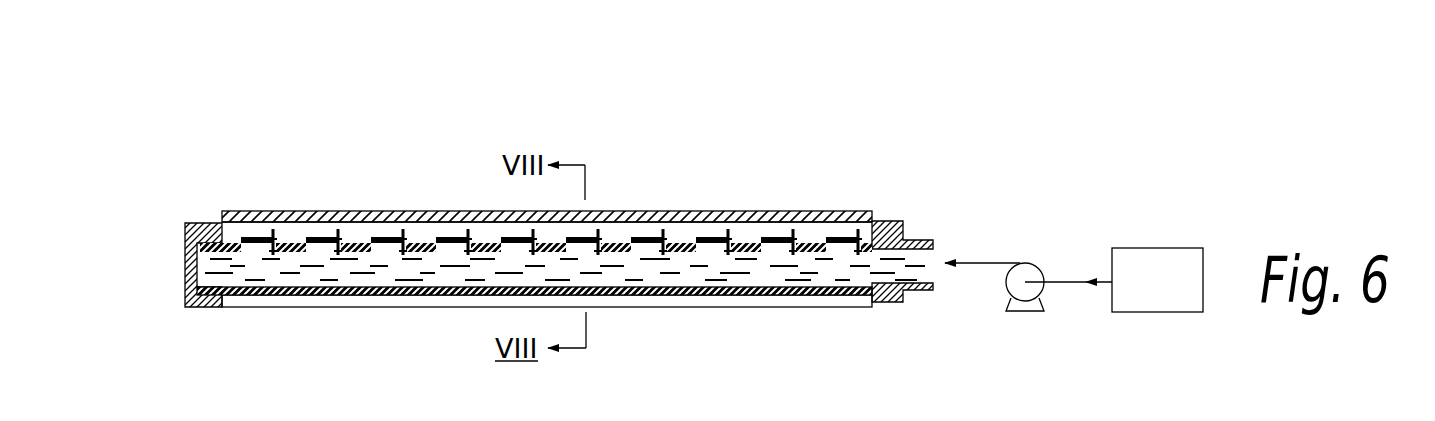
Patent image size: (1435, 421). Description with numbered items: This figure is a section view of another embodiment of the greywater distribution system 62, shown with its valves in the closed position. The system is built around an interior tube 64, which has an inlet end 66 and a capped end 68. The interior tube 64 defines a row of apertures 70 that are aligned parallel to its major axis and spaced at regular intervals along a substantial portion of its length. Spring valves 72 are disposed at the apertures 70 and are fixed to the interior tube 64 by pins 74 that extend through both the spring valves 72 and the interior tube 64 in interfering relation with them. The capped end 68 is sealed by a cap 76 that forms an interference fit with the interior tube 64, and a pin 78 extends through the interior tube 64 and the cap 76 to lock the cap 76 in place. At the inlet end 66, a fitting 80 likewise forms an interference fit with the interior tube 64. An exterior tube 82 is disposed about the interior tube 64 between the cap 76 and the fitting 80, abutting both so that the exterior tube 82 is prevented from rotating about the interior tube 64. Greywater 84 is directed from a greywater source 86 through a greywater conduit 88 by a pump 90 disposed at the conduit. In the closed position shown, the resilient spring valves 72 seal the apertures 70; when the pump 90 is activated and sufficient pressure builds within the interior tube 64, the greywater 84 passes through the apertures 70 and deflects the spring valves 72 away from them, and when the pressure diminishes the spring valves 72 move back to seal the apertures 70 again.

The greywater distribution system 62 is at (263, 122).
The interior tube 64 is at (292, 247).
The inlet end 66 is at (887, 238).
The capped end 68 is at (223, 217).
The apertures 70 is at (380, 237).
The spring valves 72 is at (444, 243).
The pins 74 is at (471, 243).
The cap 76 is at (185, 288).
The pin 78 is at (205, 226).
The fitting 80 is at (885, 302).
The exterior tube 82 is at (680, 216).
The greywater 84 is at (724, 268).
The greywater source 86 is at (1150, 262).
The greywater conduit 88 is at (1060, 290).
The pump 90 is at (1012, 290).